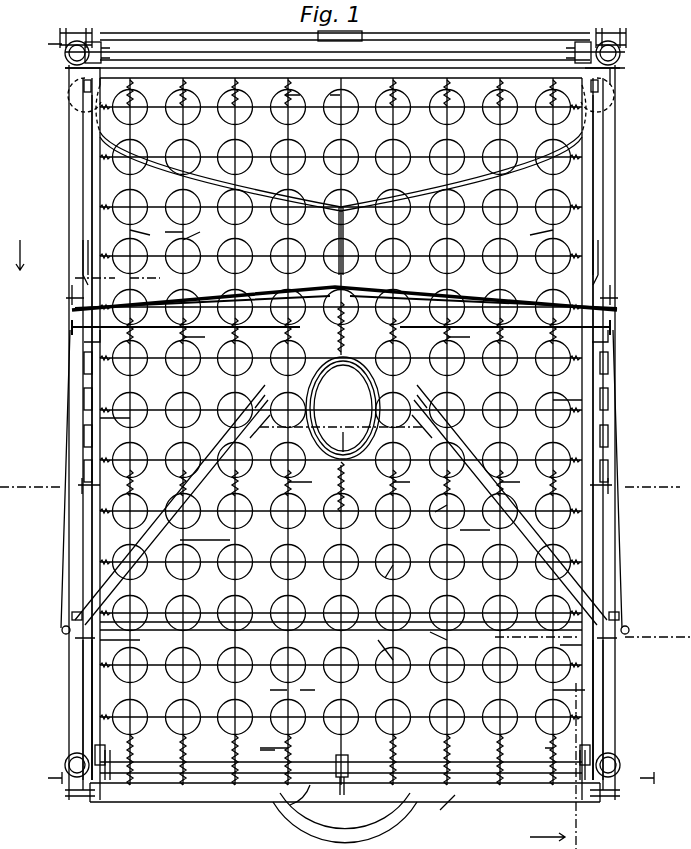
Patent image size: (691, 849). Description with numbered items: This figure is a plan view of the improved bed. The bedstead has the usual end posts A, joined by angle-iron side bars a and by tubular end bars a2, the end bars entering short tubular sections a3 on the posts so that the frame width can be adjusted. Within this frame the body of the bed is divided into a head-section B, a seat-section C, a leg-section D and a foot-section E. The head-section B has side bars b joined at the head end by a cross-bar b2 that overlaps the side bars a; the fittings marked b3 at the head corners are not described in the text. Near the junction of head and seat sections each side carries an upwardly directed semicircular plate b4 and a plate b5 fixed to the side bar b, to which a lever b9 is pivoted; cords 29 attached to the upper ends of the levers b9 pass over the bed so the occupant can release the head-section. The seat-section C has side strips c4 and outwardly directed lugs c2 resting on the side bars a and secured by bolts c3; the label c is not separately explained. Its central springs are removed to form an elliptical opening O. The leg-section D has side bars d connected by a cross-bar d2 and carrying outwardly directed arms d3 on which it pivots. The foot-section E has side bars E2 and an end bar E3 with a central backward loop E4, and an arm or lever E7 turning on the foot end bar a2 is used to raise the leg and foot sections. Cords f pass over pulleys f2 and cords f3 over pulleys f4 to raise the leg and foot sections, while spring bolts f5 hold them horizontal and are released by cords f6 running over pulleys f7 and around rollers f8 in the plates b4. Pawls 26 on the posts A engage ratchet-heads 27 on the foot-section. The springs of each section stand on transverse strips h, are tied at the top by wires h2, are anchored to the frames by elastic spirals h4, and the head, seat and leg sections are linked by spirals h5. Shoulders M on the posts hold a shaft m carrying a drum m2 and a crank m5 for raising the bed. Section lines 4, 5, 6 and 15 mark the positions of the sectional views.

The end posts A is at (65, 55).
The shoulders or projections M is at (62, 28).
The side bars a is at (69, 160).
The end bars a2 is at (500, 45).
The short tubular sections a3 is at (100, 45).
The side bars of head-section b is at (92, 200).
The cross-bar b2 is at (225, 70).
The corner bracket b3 is at (68, 72).
The semicircular plate b4 is at (590, 286).
The plate b5 is at (83, 246).
The lever b9 is at (68, 299).
The head-section B is at (582, 125).
The seat-section C is at (206, 385).
The leg-section D is at (312, 520).
The foot-section E is at (369, 690).
The side bars of foot-section E2 is at (92, 695).
The end bar of foot-section E3 is at (452, 814).
The loop or bend E4 is at (380, 830).
The arm or lever E7 is at (336, 788).
The opening O is at (342, 408).
The transverse strips h is at (390, 187).
The transverse strips h2 is at (375, 460).
The elastic springs h4 is at (341, 420).
The elastic spiral springs h5 is at (362, 408).
The cords f is at (165, 512).
The pulleys f2 is at (72, 615).
The cords f3 is at (636, 668).
The pulleys f4 is at (78, 640).
The spring-operated bolts f5 is at (341, 643).
The cords f6 is at (84, 336).
The pulleys f7 is at (62, 635).
The rollers f8 is at (70, 328).
The catch c is at (84, 410).
The lugs or projections c2 is at (84, 360).
The pins or bolts c3 is at (80, 470).
The side strips or bars c4 is at (341, 406).
The side bars of leg-section d is at (638, 530).
The cross-bar d2 is at (380, 642).
The arms d3 is at (78, 482).
The shaft m is at (290, 805).
The drum m2 is at (78, 796).
The crank m5 is at (50, 780).
The section line 4 is at (125, 279).
The section line 5 is at (342, 496).
The section line 6 is at (584, 636).
The section line 15 is at (344, 421).
The pawls 26 is at (620, 748).
The ratchet-heads 27 is at (96, 802).
The cords 29 is at (344, 292).